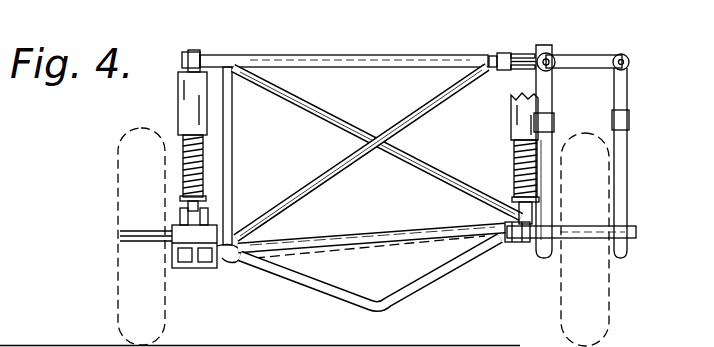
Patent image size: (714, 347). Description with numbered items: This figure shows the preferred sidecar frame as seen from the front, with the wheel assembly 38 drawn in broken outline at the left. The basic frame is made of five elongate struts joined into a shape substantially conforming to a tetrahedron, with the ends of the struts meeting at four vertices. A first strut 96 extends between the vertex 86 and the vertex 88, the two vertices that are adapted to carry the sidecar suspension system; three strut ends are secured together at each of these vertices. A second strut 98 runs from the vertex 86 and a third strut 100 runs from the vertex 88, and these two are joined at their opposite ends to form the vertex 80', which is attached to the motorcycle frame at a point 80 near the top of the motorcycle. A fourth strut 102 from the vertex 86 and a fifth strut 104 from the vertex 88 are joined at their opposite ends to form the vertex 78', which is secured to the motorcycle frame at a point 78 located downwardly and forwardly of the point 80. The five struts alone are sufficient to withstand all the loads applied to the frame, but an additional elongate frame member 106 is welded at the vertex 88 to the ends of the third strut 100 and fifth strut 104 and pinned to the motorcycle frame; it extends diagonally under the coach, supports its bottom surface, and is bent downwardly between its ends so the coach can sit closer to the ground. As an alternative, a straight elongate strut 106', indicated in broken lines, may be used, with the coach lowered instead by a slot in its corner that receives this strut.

The wheel assembly 38 is at (100, 209).
The point on motorcycle frame 78 is at (570, 199).
The vertex 78' is at (529, 239).
The point on motorcycle frame 80 is at (581, 134).
The vertex 80' is at (504, 37).
The vertex 86 is at (201, 52).
The vertex 88 is at (236, 262).
The first strut 96 is at (230, 155).
The second strut 98 is at (334, 55).
The third strut 100 is at (428, 107).
The fourth strut 102 is at (420, 162).
The fifth strut 104 is at (352, 240).
The elongate frame member 106 is at (370, 287).
The straight elongate strut 106' is at (370, 261).